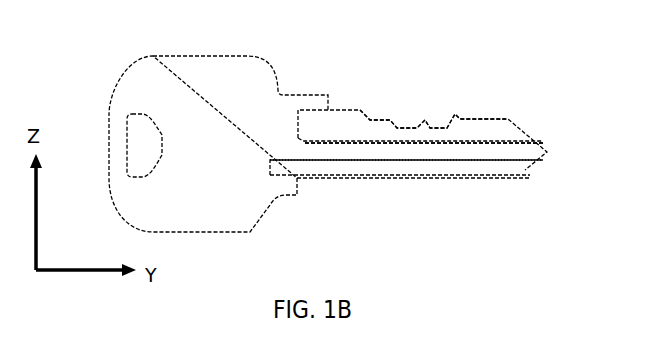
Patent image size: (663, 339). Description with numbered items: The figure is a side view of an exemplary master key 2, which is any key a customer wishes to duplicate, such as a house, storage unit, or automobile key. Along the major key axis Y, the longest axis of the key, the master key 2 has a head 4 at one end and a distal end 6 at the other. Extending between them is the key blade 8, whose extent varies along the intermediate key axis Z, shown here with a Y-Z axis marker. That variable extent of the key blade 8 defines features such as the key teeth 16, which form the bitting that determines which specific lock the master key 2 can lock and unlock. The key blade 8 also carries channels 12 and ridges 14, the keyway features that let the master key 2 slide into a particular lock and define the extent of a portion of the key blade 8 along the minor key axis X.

The master key 2 is at (478, 58).
The head 4 is at (147, 78).
The distal end 6 is at (547, 153).
The key blade 8 is at (340, 123).
The channels 12 is at (525, 170).
The ridges 14 is at (357, 153).
The key teeth 16 is at (482, 117).